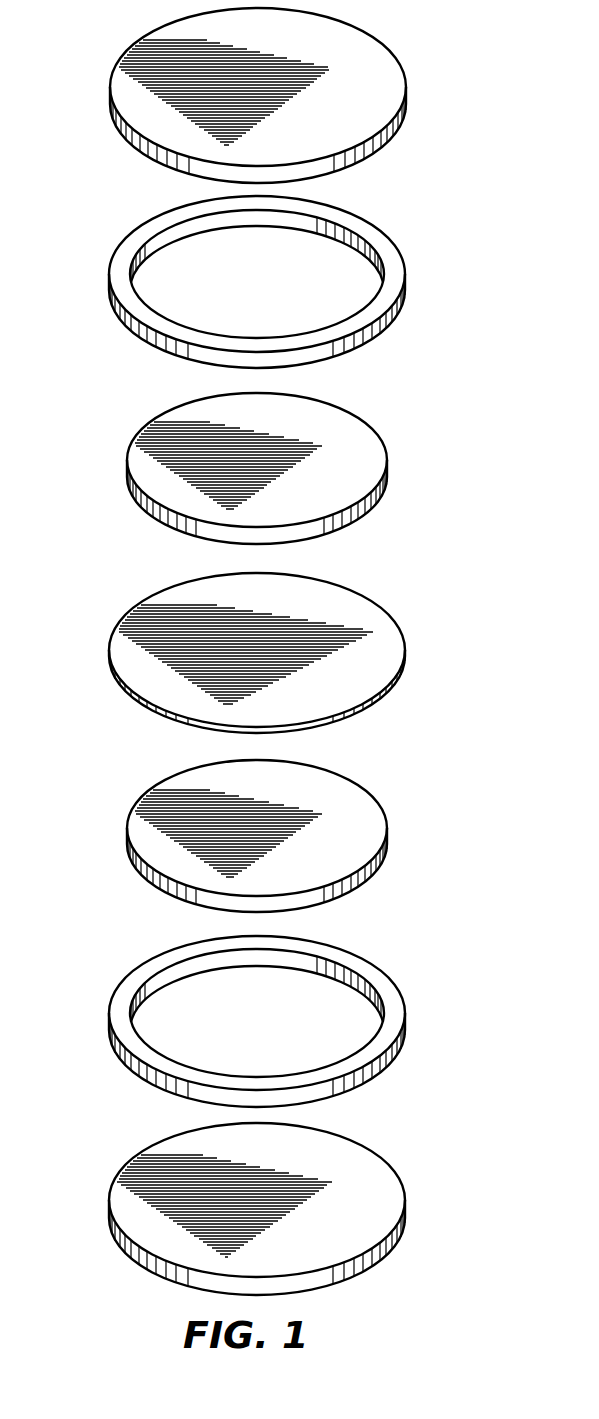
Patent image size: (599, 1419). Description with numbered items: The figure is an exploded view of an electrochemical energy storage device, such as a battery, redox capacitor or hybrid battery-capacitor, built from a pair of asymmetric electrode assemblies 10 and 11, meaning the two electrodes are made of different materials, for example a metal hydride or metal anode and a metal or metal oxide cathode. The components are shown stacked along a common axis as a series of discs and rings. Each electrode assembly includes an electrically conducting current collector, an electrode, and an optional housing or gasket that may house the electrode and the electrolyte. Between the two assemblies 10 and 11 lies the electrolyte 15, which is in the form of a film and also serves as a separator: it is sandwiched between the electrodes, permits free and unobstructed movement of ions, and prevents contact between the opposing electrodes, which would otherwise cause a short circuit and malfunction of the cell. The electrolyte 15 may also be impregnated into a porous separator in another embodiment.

The asymmetric electrode assembly 10 is at (273, 276).
The asymmetric electrode assembly 11 is at (274, 1027).
The electrolyte 15 is at (112, 672).